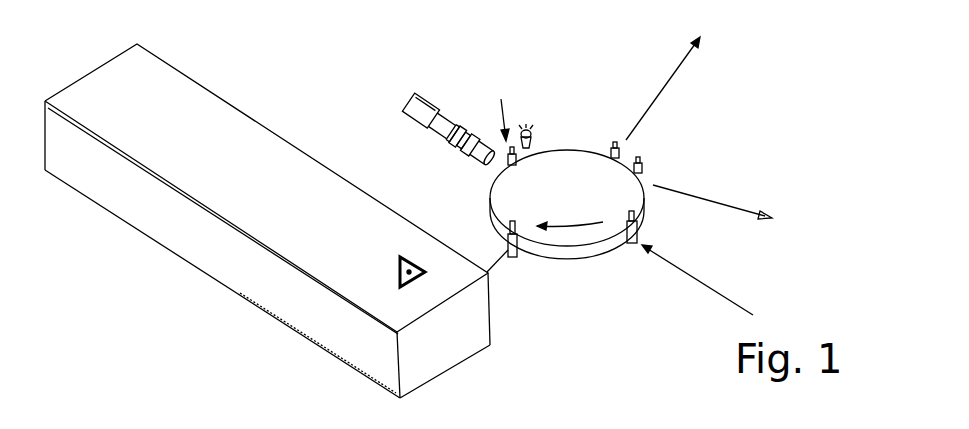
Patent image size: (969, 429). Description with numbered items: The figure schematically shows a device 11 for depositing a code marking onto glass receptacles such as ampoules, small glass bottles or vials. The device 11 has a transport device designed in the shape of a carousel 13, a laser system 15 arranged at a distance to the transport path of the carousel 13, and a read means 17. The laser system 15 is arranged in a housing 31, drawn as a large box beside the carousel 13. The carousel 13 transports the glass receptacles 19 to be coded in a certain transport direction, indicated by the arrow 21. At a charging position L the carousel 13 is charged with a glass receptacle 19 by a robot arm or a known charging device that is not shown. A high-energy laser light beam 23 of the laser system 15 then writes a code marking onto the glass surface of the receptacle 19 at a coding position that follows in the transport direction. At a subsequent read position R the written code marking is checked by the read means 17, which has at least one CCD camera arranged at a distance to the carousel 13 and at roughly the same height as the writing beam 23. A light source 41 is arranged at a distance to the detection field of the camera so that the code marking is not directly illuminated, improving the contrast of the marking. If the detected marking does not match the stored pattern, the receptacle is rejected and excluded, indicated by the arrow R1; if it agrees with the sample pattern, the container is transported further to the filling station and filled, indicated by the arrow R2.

The device for depositing a code marking 11 is at (335, 46).
The carousel 13 is at (565, 258).
The laser system 15 is at (182, 260).
The read means 17 is at (417, 114).
The glass receptacle 19 is at (618, 148).
The transport direction arrow 21 is at (567, 228).
The laser light beam 23 is at (495, 256).
The housing 31 is at (245, 137).
The light source 41 is at (527, 132).
The read position R is at (502, 107).
The reject arrow R1 is at (682, 88).
The filling station transport arrow R2 is at (712, 197).
The charging position L is at (697, 280).